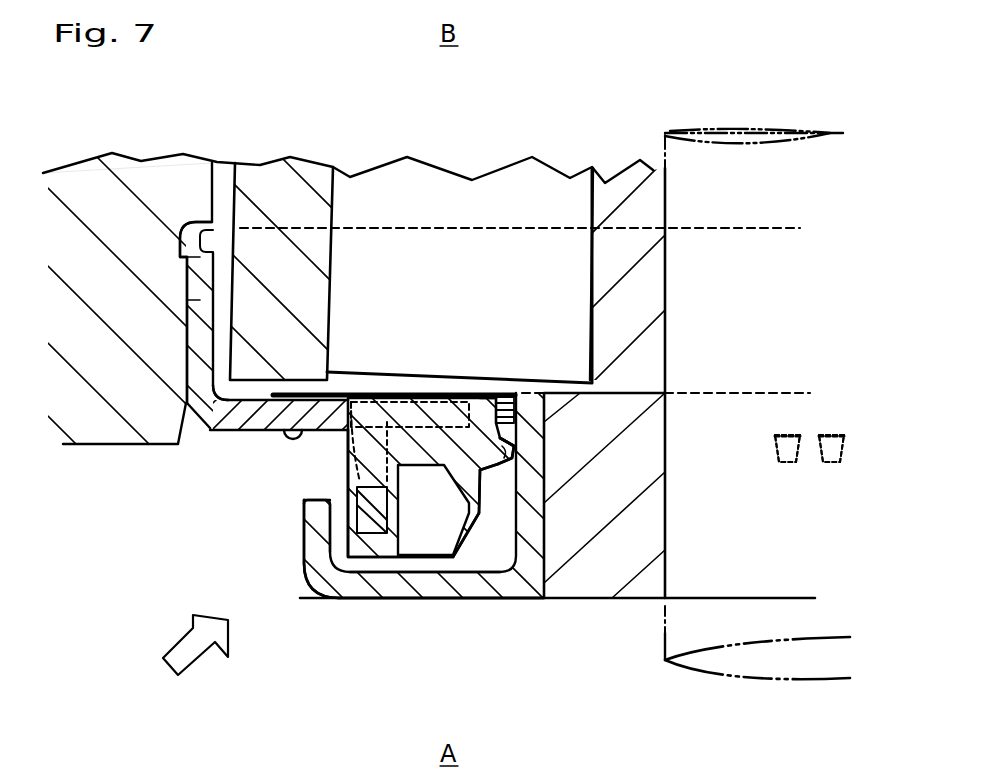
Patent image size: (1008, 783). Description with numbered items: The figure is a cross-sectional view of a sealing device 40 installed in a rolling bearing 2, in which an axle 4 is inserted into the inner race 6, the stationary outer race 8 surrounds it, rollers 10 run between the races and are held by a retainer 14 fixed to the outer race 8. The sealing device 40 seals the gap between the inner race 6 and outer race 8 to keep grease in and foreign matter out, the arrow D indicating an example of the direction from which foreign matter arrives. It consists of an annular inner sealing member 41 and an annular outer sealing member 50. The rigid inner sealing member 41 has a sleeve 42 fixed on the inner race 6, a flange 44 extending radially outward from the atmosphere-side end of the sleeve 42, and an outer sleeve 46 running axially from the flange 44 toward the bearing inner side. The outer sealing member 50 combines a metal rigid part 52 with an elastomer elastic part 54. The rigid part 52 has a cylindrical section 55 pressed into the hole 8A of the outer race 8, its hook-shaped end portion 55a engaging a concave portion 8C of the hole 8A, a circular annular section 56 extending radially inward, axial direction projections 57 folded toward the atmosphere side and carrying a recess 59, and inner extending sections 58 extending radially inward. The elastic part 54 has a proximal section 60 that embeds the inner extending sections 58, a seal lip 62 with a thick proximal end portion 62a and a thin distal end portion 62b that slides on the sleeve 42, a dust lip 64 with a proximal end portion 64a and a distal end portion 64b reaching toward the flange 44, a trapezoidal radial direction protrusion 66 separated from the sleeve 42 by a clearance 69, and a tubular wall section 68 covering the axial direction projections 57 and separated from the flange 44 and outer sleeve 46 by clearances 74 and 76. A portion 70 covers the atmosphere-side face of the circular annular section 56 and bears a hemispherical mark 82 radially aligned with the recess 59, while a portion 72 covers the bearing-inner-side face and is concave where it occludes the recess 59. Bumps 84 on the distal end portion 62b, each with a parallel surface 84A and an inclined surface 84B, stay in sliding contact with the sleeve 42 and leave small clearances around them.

The rolling bearing 2 is at (388, 106).
The axle 4 is at (737, 128).
The inner race 6 is at (630, 165).
The outer race 8 is at (110, 428).
The hole 8A is at (187, 302).
The concave portion 8C is at (190, 258).
The rollers 10 is at (437, 183).
The retainer 14 is at (285, 165).
The sealing device 40 is at (278, 665).
The inner sealing member 41 is at (375, 602).
The sleeve 42 is at (545, 560).
The flange 44 is at (432, 602).
The outer sleeve 46 is at (300, 560).
The outer sealing member 50 is at (190, 488).
The rigid part 52 is at (190, 420).
The elastic part 54 is at (332, 523).
The cylindrical section 55 is at (205, 338).
The end portion 55a is at (195, 232).
The circular annular section 56 is at (238, 413).
The axial direction projections 57 is at (385, 512).
The inner extending sections 58 is at (430, 398).
The recess 59 is at (355, 488).
The proximal section 60 is at (460, 392).
The seal lip 62 is at (508, 460).
The proximal end portion 62a is at (500, 466).
The distal end portion 62b is at (512, 446).
The dust lip 64 is at (447, 565).
The proximal end portion 64a is at (485, 485).
The distal end portion 64b is at (466, 552).
The radial direction protrusion 66 is at (503, 404).
The tubular wall section 68 is at (360, 571).
The clearance 69 is at (503, 395).
The portion 70 is at (292, 428).
The portion 72 is at (356, 391).
The clearance 74 is at (365, 585).
The clearance 76 is at (330, 512).
The mark 82 is at (293, 426).
The bumps 84 is at (510, 430).
The parallel surface 84A is at (782, 434).
The inclined surface 84B is at (795, 434).
The arrow D is at (195, 645).